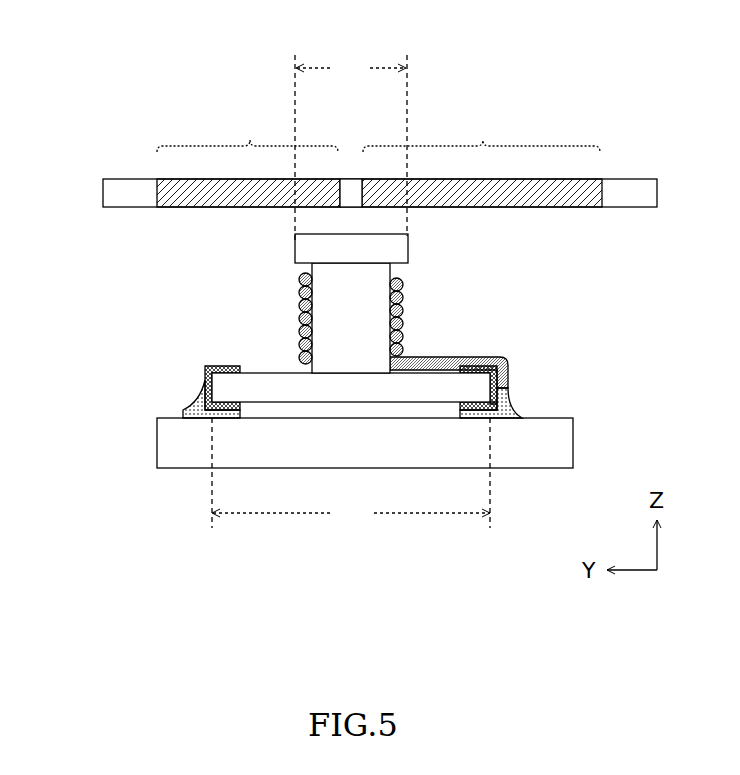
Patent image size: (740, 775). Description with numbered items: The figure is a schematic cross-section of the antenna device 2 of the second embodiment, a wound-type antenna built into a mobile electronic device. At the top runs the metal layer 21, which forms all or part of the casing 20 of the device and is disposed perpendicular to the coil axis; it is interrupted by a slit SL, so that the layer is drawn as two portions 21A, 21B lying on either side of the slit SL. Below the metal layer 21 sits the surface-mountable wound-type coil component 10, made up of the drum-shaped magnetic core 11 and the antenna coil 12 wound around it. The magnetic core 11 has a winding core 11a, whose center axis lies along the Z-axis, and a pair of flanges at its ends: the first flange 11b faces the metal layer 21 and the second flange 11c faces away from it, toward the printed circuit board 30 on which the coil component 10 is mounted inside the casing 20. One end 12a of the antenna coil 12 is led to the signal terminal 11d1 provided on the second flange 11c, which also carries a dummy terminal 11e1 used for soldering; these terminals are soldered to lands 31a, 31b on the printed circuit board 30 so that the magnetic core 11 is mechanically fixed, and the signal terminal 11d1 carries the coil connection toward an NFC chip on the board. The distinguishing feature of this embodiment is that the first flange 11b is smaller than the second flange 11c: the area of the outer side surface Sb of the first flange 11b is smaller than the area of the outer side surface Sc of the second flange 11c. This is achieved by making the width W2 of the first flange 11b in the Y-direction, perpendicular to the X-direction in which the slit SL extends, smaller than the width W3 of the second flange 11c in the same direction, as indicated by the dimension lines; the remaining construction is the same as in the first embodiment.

The antenna device 2 is at (497, 40).
The wound-type coil component 10 is at (379, 303).
The magnetic core 11 is at (354, 303).
The winding core 11a is at (340, 327).
The first flange 11b is at (295, 249).
The second flange 11c is at (230, 391).
The signal terminal 11d1 is at (505, 382).
The dummy terminal 11e1 is at (207, 368).
The antenna coil 12 is at (406, 318).
The one end of the antenna coil 12a is at (508, 358).
The casing 20 is at (120, 193).
The metal layer 21 is at (379, 140).
The first conductor portion 21A is at (248, 140).
The second conductor portion 21B is at (482, 140).
The printed circuit board 30 is at (157, 430).
The land 31a is at (505, 418).
The second solder joint 31b is at (200, 418).
The slit SL is at (352, 178).
The outer side surface of the first flange Sb is at (322, 235).
The outer side surface of the second flange Sc is at (288, 405).
The width of the first flange W2 is at (351, 147).
The width of the second flange W3 is at (351, 473).